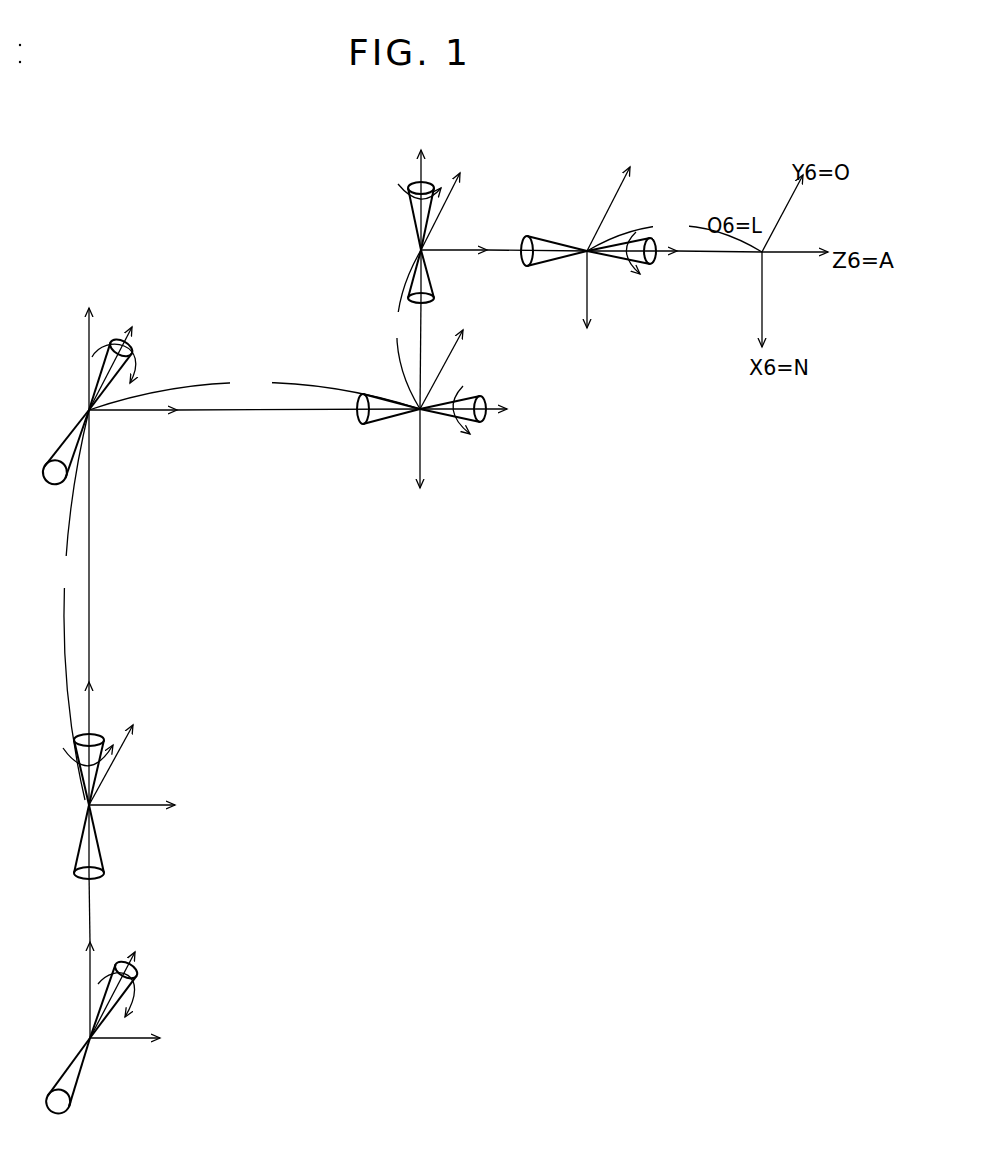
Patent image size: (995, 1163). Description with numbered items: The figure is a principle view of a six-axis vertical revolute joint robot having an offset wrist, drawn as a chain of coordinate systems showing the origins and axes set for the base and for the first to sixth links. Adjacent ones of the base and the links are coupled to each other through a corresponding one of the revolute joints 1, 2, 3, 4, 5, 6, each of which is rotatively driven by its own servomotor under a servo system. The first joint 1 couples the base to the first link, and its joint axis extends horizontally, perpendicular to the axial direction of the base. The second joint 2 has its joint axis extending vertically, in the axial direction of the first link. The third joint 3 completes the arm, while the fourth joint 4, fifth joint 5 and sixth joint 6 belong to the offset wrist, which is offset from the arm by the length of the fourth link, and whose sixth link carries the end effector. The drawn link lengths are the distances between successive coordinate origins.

The first joint 1 is at (190, 962).
The second joint 2 is at (163, 757).
The third joint 3 is at (146, 455).
The fourth joint 4 is at (491, 465).
The fifth joint 5 is at (381, 207).
The sixth joint 6 is at (583, 195).